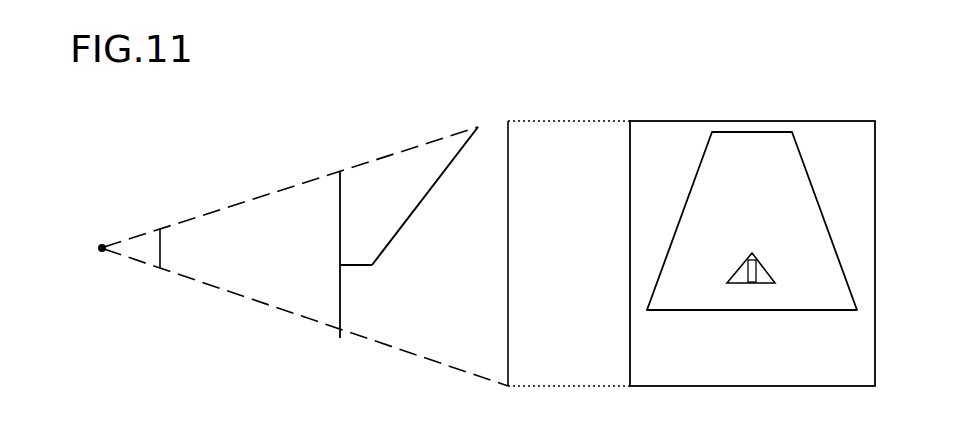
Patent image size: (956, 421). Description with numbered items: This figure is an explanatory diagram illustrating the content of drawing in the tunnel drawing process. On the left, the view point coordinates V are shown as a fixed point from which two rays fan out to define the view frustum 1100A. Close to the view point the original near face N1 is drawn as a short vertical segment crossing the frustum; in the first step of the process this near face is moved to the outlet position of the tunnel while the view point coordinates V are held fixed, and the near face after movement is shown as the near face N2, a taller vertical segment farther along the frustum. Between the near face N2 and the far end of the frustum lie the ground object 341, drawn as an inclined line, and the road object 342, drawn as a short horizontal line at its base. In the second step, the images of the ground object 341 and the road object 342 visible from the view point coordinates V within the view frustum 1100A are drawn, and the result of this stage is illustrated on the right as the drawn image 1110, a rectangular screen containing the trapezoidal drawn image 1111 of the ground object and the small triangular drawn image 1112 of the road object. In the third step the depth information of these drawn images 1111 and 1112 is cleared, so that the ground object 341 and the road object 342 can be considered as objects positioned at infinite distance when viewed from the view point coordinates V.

The view point coordinates V is at (86, 250).
The near face N1 is at (158, 243).
The near face after movement N2 is at (338, 200).
The ground object 341 is at (437, 178).
The road object 342 is at (357, 264).
The view frustum 1100A is at (483, 122).
The drawn image 1110 is at (697, 121).
The drawn image of ground object 1111 is at (763, 131).
The drawn image of road object 1112 is at (767, 260).